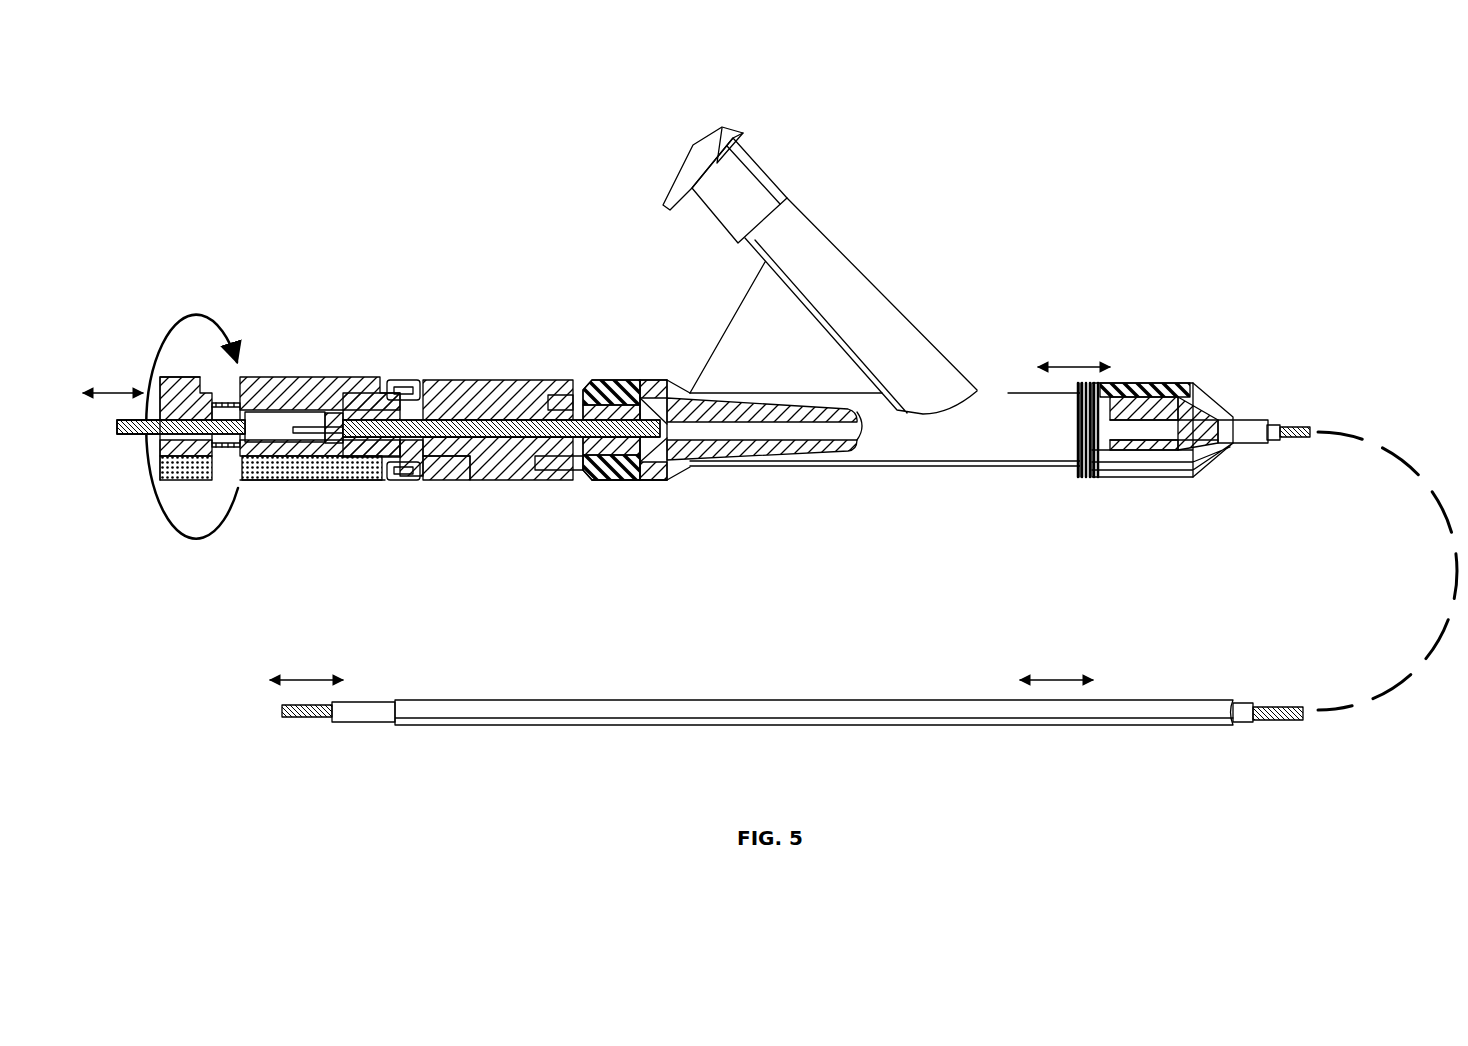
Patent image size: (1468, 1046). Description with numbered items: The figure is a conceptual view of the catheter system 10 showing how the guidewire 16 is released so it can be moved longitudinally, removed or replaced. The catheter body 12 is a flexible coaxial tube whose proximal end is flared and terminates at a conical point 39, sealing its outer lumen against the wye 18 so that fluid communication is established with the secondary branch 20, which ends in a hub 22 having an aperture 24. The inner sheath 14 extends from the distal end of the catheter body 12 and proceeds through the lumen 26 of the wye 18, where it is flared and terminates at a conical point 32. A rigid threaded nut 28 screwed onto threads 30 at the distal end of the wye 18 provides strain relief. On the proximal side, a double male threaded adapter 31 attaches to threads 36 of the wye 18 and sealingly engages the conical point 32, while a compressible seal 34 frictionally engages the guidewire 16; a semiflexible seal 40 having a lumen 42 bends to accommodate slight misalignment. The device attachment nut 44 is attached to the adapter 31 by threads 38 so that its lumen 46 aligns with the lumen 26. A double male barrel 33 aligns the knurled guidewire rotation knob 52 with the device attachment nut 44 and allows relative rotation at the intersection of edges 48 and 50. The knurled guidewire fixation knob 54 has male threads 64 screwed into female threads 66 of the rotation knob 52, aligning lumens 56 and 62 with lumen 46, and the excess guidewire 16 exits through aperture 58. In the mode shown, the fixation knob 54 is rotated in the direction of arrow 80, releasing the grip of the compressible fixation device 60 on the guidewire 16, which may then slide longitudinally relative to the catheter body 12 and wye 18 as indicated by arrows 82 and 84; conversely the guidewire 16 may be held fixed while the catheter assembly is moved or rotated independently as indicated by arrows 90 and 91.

The catheter system 10 is at (1052, 178).
The catheter body 12 is at (1256, 420).
The inner sheath 14 is at (352, 482).
The guidewire 16 is at (138, 437).
The wye 18 is at (977, 440).
The secondary branch 20 is at (913, 350).
The hub 22 is at (760, 200).
The aperture 24 is at (697, 137).
The lumen 26 is at (782, 424).
The rigid threaded nut 28 is at (1158, 464).
The threads 30 is at (1086, 472).
The double male threaded adapter 31 is at (648, 481).
The conical point 32 is at (672, 470).
The double male barrel 33 is at (445, 481).
The compressible seal 34 is at (648, 379).
The threads 36 is at (617, 481).
The threads 38 is at (552, 480).
The conical point 39 is at (1193, 425).
The semiflexible seal 40 is at (607, 379).
The lumen 42 is at (560, 380).
The device attachment nut 44 is at (450, 380).
The lumen 46 is at (518, 440).
The edge 48 is at (403, 379).
The edge 50 is at (386, 392).
The knurled guidewire rotation knob 52 is at (287, 377).
The knurled guidewire fixation knob 54 is at (170, 378).
The lumen 56 is at (412, 477).
The aperture 58 is at (168, 420).
The compressible fixation device 60 is at (333, 412).
The lumen 62 is at (312, 482).
The male threads 64 is at (230, 444).
The female threads 66 is at (277, 482).
The arrow 80 is at (194, 322).
The arrow 82 is at (113, 391).
The arrow 84 is at (310, 680).
The arrow 90 is at (1060, 680).
The arrow 91 is at (1077, 367).